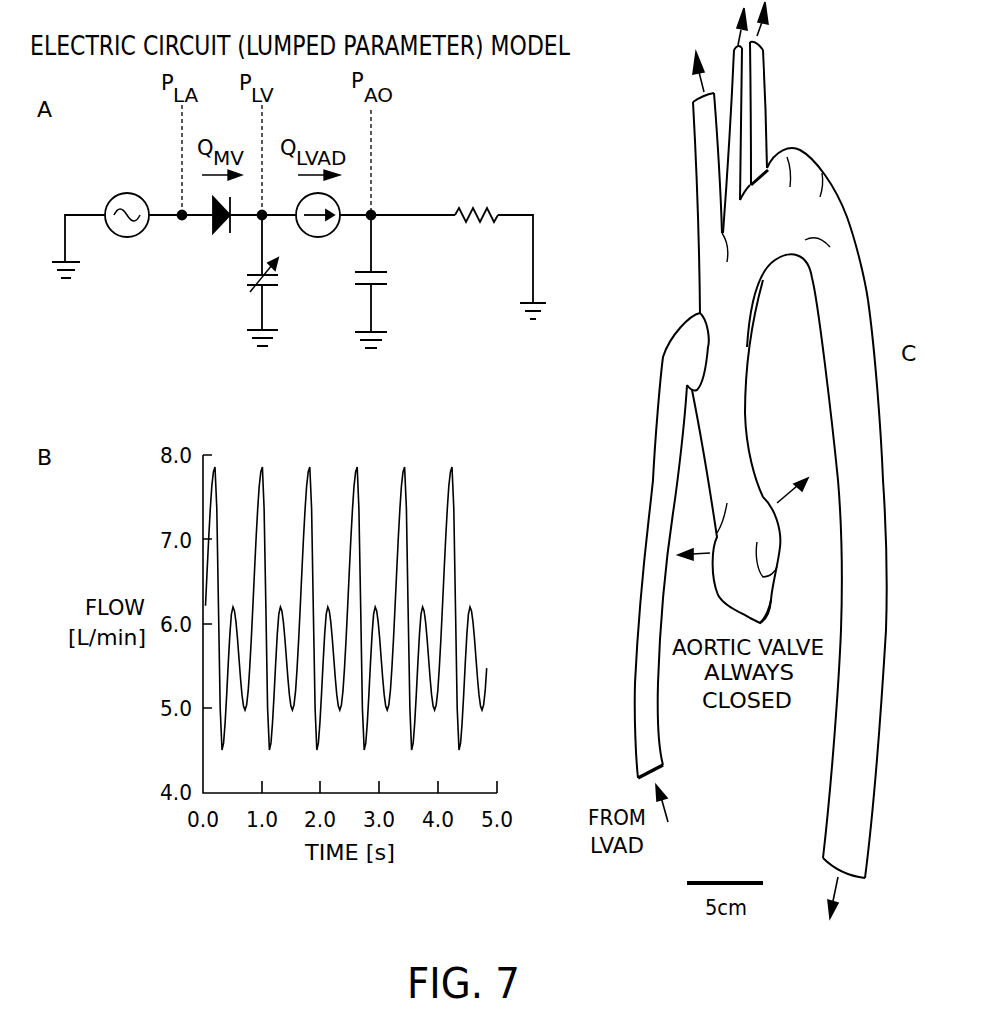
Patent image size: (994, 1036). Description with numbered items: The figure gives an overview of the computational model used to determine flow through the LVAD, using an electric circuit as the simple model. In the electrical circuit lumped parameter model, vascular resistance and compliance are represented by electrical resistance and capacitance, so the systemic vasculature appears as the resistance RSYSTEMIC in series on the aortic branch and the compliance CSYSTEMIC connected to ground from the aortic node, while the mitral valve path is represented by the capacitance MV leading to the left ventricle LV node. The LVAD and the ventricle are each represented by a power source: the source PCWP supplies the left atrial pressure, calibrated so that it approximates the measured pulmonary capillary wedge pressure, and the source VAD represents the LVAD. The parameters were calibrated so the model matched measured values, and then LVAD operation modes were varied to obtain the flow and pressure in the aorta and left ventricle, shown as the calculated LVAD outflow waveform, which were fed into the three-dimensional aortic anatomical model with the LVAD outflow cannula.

The pulmonary capillary wedge pressure source PCWP is at (127, 230).
The LVAD power source VAD is at (318, 230).
The mitral valve compliance MV is at (245, 272).
The left ventricle LV is at (262, 353).
The systemic vascular resistance RSYSTEMIC is at (478, 194).
The systemic vascular compliance CSYSTEMIC is at (428, 273).